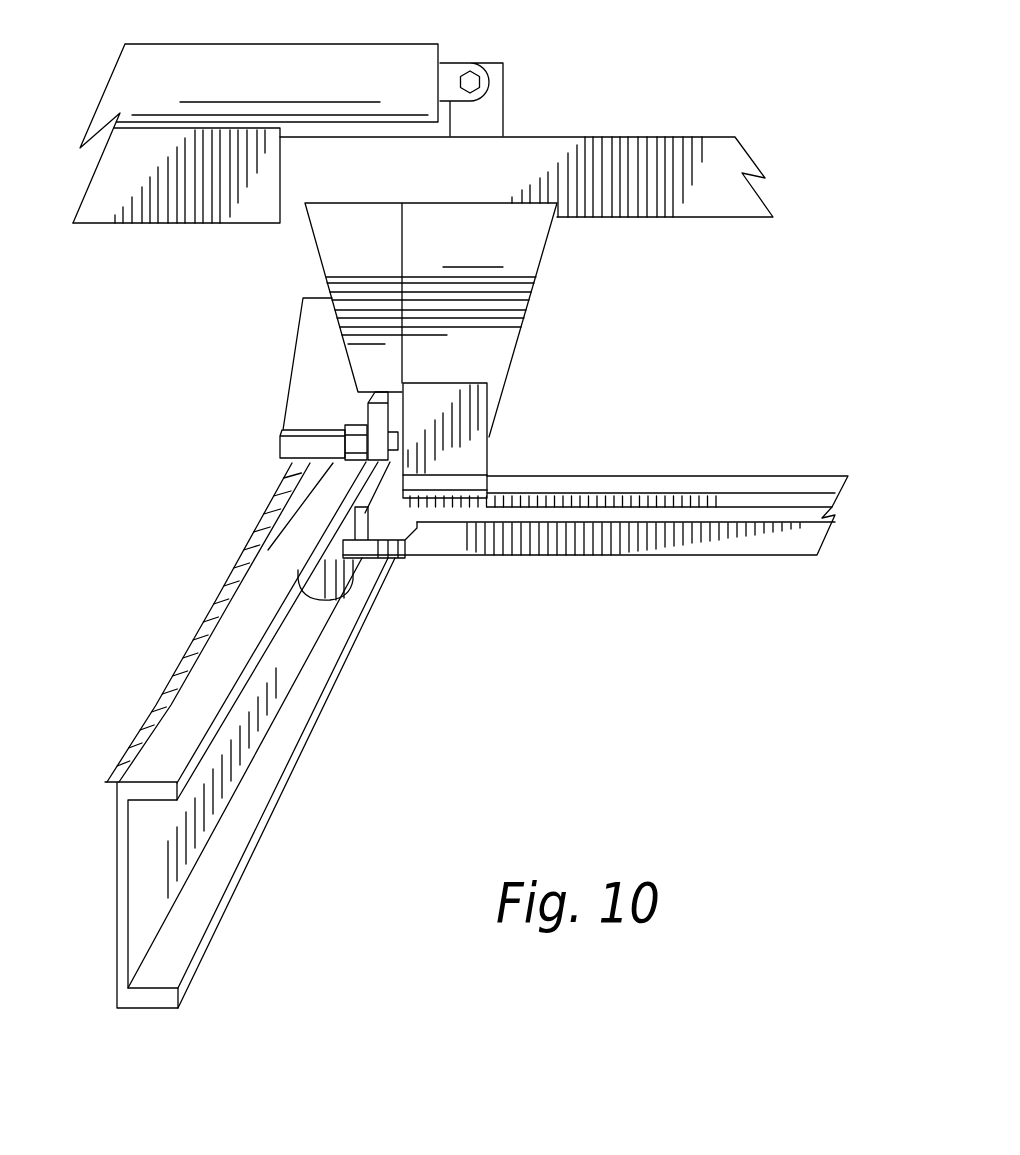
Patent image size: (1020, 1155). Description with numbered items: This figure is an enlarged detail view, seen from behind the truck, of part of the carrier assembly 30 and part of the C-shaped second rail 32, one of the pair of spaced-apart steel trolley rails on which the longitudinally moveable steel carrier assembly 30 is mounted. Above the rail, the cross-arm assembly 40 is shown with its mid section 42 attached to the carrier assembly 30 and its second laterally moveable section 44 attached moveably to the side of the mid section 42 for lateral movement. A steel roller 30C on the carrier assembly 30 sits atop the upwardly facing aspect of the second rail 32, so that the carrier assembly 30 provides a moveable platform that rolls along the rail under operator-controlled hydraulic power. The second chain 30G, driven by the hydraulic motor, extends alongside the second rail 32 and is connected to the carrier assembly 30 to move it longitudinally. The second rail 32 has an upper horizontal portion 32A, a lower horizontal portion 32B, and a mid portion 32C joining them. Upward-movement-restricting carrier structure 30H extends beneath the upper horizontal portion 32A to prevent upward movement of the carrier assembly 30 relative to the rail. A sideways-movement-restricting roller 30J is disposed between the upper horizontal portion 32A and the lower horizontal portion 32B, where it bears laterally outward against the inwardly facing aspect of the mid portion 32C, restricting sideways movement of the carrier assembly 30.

The cross-arm assembly 40 is at (744, 132).
The mid section 42 is at (567, 137).
The second laterally moveable section 44 is at (230, 223).
The carrier assembly 30 is at (555, 485).
The steel roller 30C is at (350, 432).
The second chain 30G is at (270, 530).
The upward-movement-restricting carrier structure 30H is at (337, 547).
The sideways-movement-restricting roller 30J is at (333, 587).
The second rail 32 is at (217, 668).
The upper horizontal portion 32A is at (200, 752).
The lower horizontal portion 32B is at (268, 807).
The mid portion 32C is at (138, 912).